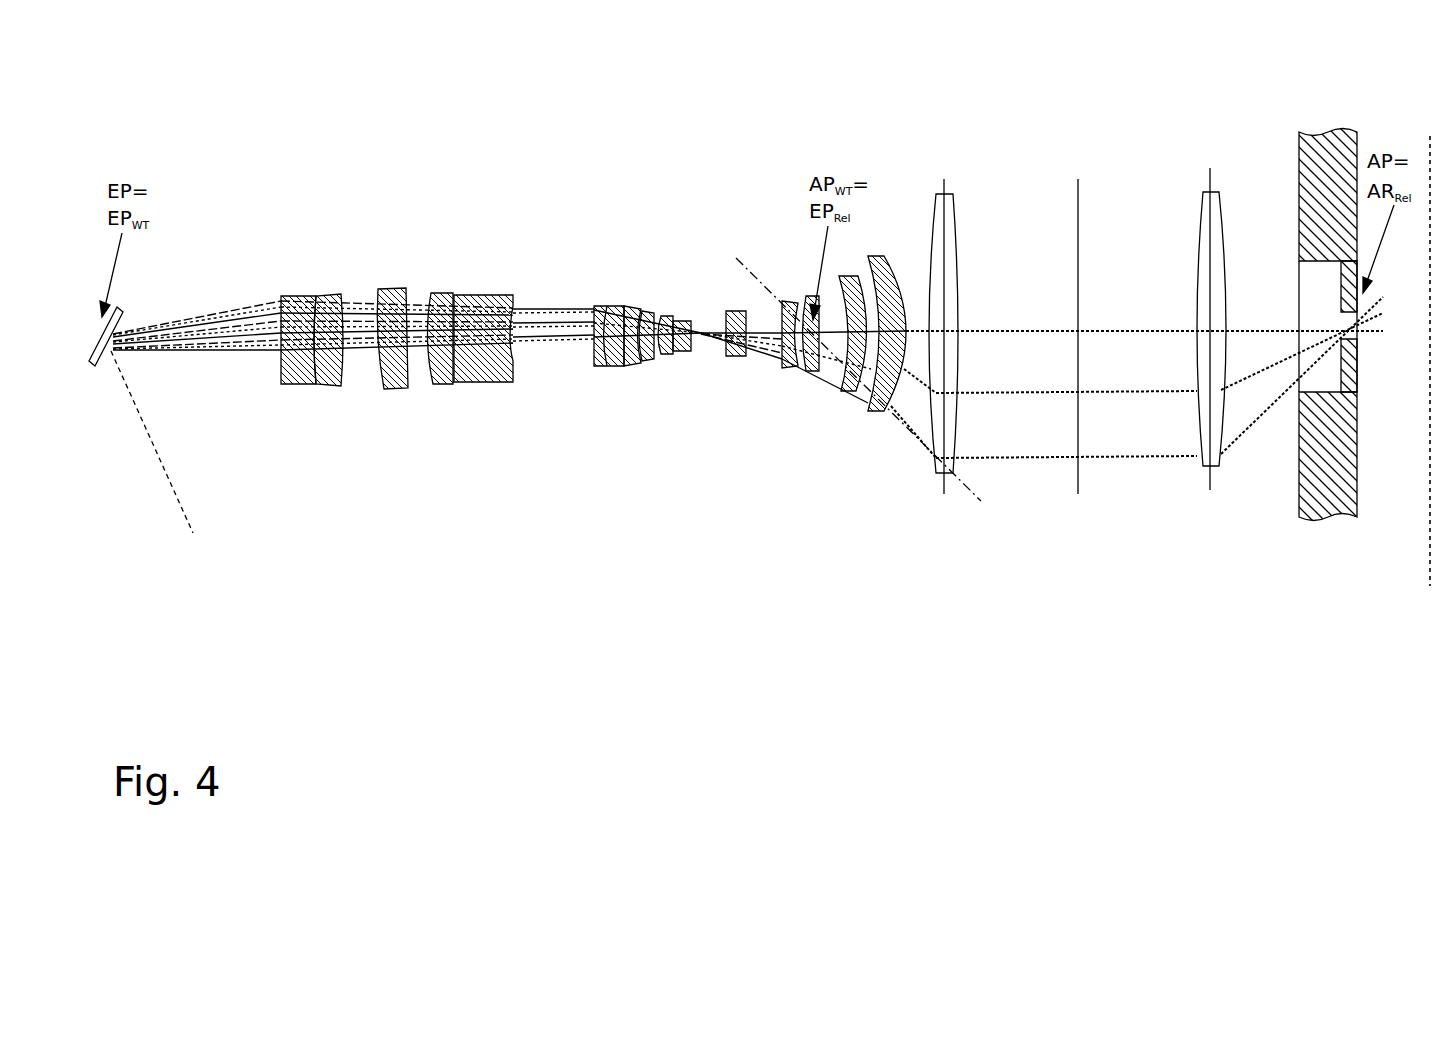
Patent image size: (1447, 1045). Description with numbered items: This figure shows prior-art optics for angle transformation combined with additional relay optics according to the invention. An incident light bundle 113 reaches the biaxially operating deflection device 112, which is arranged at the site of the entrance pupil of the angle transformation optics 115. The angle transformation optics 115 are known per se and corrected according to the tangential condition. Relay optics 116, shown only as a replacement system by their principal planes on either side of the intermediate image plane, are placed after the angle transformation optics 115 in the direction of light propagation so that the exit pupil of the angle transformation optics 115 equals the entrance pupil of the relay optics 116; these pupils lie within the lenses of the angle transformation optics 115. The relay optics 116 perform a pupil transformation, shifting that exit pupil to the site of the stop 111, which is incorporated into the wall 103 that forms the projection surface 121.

The biaxially operating deflection device 112 is at (98, 368).
The incident light bundle 113 is at (160, 458).
The angle transformation optics 115 is at (240, 130).
The relay optics 116 is at (1250, 124).
The wall 103 is at (1300, 455).
The stop 111 is at (1355, 358).
The projection surface 121 is at (1431, 467).